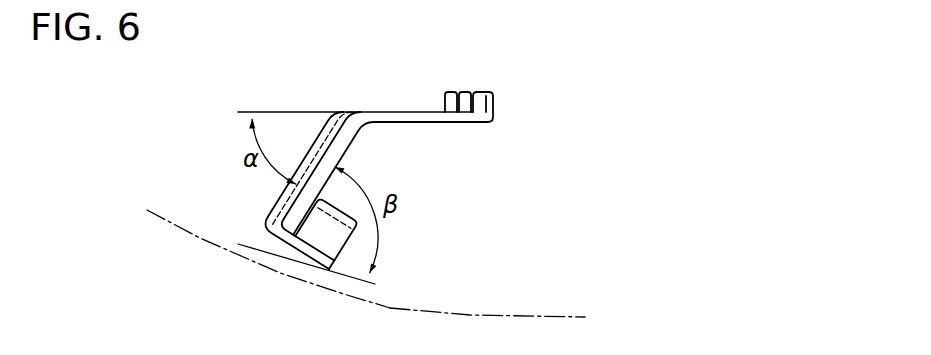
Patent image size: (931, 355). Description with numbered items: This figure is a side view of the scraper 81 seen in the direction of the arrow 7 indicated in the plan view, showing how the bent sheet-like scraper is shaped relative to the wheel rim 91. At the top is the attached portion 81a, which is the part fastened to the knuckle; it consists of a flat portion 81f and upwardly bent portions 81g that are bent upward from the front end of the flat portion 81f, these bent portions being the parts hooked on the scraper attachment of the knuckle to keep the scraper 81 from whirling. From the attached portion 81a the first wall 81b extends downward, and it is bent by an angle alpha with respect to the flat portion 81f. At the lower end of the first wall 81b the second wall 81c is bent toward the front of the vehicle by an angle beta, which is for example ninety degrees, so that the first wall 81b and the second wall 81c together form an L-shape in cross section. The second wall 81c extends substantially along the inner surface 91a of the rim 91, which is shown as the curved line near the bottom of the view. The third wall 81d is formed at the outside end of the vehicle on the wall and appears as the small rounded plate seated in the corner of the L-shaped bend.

The glass run 7 is at (206, 118).
The scraper 81 is at (532, 98).
The attached portion 81a is at (424, 128).
The first wall 81b is at (297, 215).
The second wall 81c is at (313, 256).
The third wall 81d is at (340, 236).
The flat portion 81f is at (388, 112).
The upwardly bent portions 81g is at (476, 92).
The rim 91 is at (552, 303).
The inner surface 91a is at (483, 314).